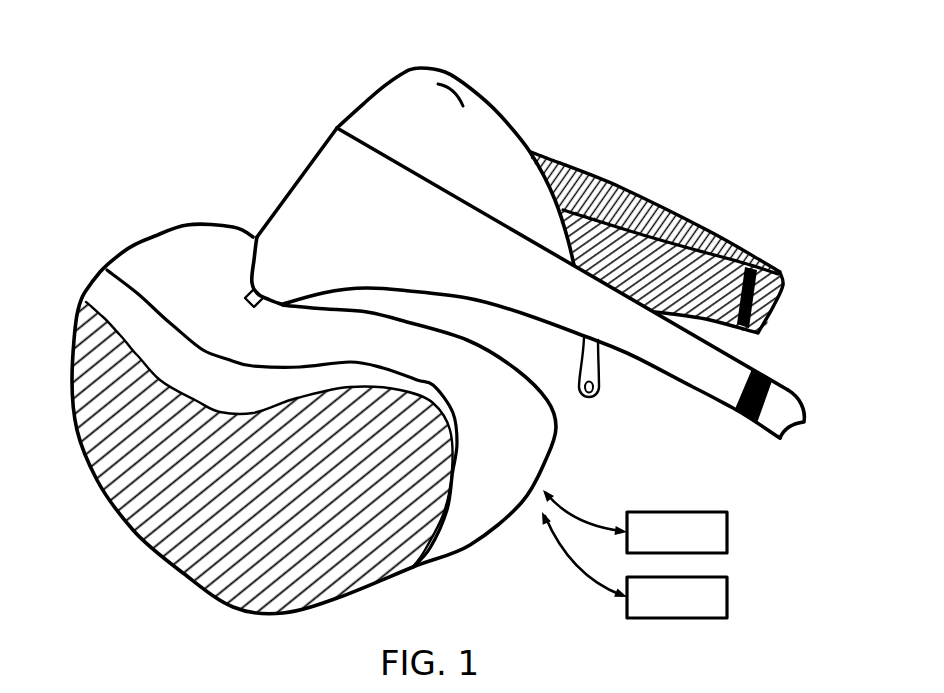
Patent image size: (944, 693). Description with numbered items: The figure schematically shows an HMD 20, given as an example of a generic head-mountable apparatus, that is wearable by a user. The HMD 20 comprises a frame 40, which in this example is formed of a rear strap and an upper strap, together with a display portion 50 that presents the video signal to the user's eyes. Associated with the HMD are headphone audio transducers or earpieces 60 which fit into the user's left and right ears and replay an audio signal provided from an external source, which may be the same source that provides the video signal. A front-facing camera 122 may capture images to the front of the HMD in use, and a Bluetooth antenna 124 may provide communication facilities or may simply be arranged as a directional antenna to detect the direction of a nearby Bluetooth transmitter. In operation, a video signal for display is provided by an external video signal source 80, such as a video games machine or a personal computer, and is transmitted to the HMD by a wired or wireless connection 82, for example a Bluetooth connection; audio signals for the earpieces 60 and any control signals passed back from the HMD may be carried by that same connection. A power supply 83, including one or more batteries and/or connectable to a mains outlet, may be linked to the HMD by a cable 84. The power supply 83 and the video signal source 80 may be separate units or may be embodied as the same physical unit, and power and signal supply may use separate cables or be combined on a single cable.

The HMD 20 is at (251, 132).
The frame 40 is at (803, 410).
The display portion 50 is at (126, 262).
The earpieces 60 is at (600, 392).
The external video signal source 80 is at (727, 532).
The wired or wireless connection 82 is at (577, 516).
The power supply 83 is at (727, 596).
The cable 84 is at (576, 566).
The front-facing camera 122 is at (248, 290).
The Bluetooth antenna 124 is at (458, 88).